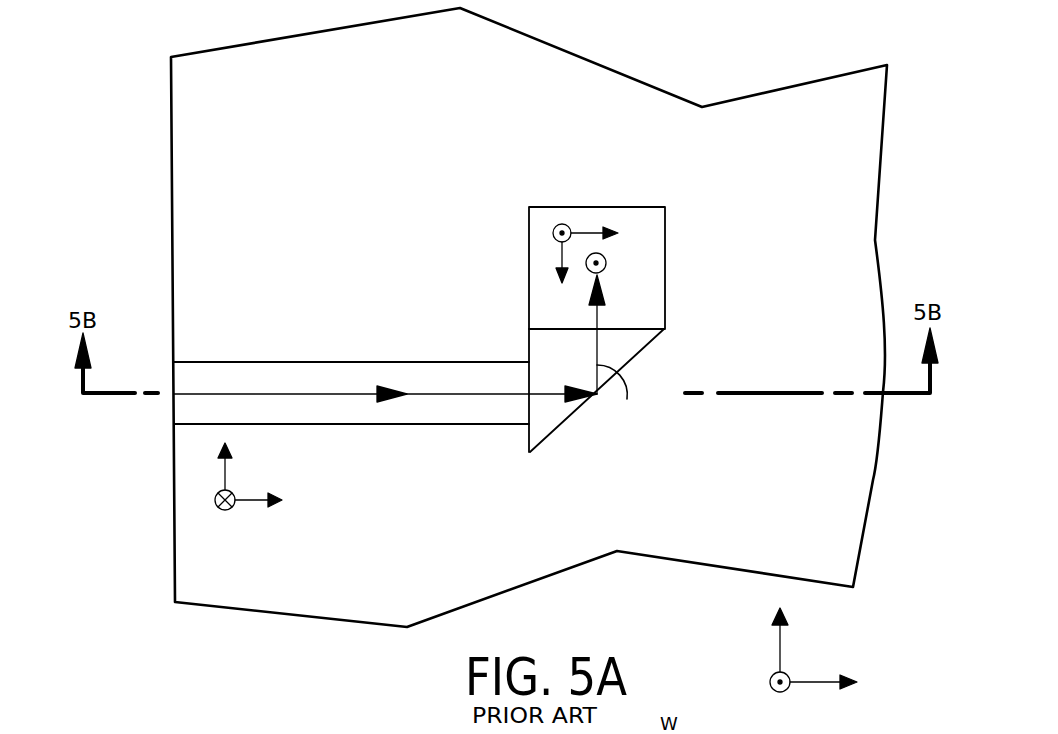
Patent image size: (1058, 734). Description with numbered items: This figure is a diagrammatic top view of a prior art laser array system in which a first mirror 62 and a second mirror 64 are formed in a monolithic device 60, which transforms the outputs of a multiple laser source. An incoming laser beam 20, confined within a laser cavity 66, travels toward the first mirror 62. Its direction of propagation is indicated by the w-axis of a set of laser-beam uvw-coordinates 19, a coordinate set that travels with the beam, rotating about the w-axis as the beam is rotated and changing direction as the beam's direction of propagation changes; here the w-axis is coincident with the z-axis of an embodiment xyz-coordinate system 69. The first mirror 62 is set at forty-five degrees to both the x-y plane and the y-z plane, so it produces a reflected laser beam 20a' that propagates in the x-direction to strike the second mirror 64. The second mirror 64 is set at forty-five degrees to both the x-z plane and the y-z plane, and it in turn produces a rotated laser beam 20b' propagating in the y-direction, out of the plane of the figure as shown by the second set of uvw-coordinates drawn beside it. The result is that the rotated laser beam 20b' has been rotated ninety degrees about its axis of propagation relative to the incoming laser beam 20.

The monolithic device 60 is at (697, 45).
The laser beam 20 is at (233, 394).
The laser cavity 66 is at (352, 362).
The second mirror 64 is at (650, 284).
The first mirror 62 is at (646, 343).
The reflected laser beam 20a' is at (630, 396).
The rotated laser beam 20b' is at (663, 307).
The laser-beam uvw-coordinates 19 is at (247, 517).
The embodiment xyz-coordinate system 69 is at (810, 650).